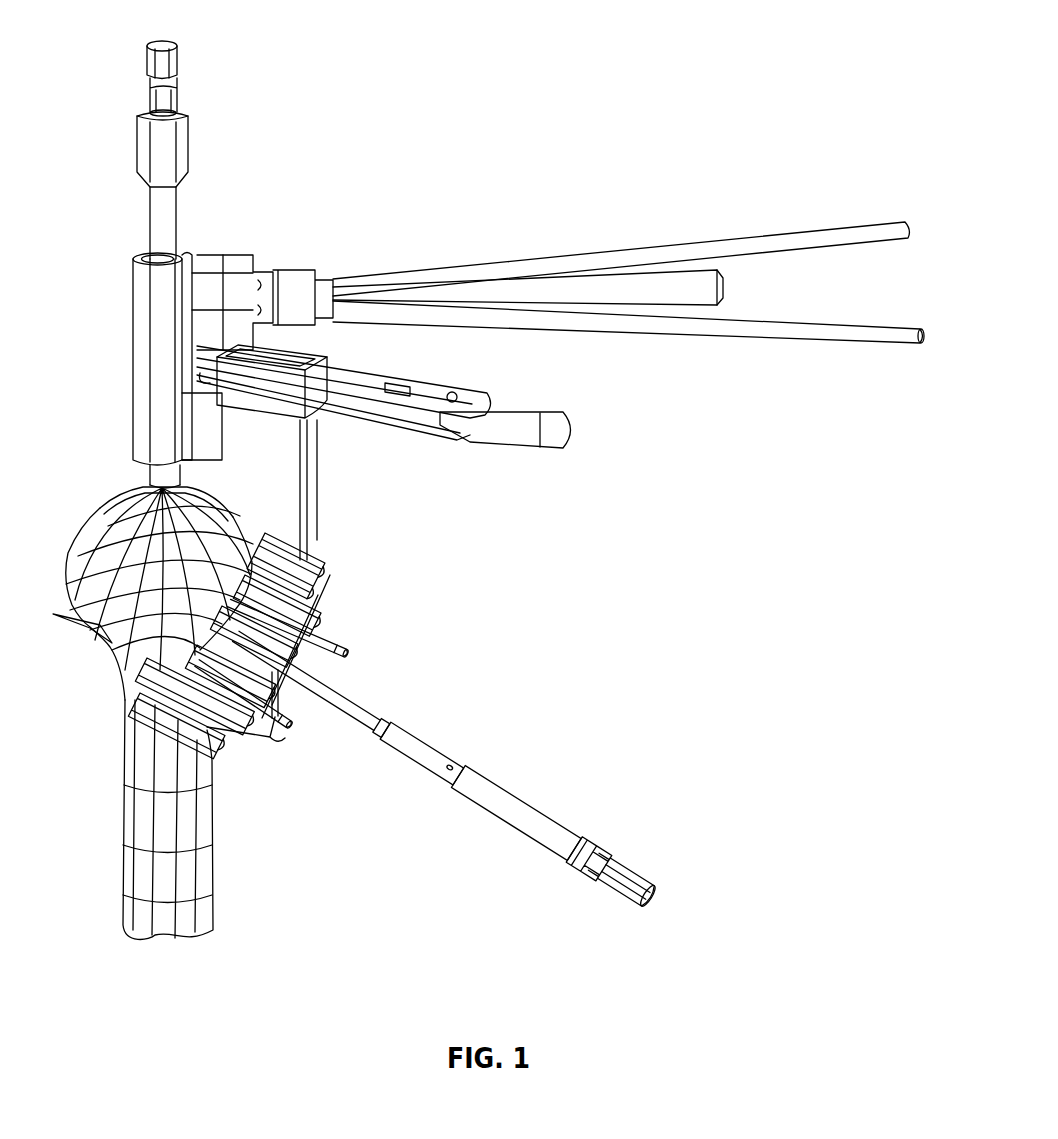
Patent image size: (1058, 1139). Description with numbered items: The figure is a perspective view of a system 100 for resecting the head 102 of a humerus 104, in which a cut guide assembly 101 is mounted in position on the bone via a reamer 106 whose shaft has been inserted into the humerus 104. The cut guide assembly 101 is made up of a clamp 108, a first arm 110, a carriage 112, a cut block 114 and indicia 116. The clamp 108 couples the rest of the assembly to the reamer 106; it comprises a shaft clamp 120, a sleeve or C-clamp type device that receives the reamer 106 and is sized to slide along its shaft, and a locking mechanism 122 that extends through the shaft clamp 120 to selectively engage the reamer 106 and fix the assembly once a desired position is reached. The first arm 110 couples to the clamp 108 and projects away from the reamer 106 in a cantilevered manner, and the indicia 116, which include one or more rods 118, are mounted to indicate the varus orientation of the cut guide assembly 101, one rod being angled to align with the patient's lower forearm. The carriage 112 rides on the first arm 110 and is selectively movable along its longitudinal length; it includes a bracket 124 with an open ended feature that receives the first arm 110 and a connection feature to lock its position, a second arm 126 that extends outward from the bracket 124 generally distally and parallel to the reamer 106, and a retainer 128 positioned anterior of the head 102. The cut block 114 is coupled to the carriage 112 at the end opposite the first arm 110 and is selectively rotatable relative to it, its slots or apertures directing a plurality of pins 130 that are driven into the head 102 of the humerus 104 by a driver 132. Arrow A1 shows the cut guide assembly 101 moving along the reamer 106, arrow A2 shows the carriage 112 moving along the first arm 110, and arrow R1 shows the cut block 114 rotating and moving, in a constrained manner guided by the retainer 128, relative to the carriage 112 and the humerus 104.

The system 100 is at (737, 71).
The cut guide assembly 101 is at (424, 180).
The head 102 is at (105, 508).
The humerus 104 is at (130, 780).
The reamer 106 is at (152, 205).
The clamp 108 is at (124, 345).
The first arm 110 is at (398, 383).
The carriage 112 is at (336, 483).
The cut block 114 is at (123, 668).
The indicia 116 is at (322, 270).
The rods 118 is at (612, 318).
The shaft clamp 120 is at (133, 393).
The locking mechanism 122 is at (456, 458).
The bracket 124 is at (270, 398).
The second arm 126 is at (316, 442).
The retainer 128 is at (258, 740).
The pins 130 is at (337, 641).
The driver 132 is at (545, 810).
The arrow A1 is at (128, 363).
The arrow A2 is at (297, 340).
The arrow R1 is at (330, 538).